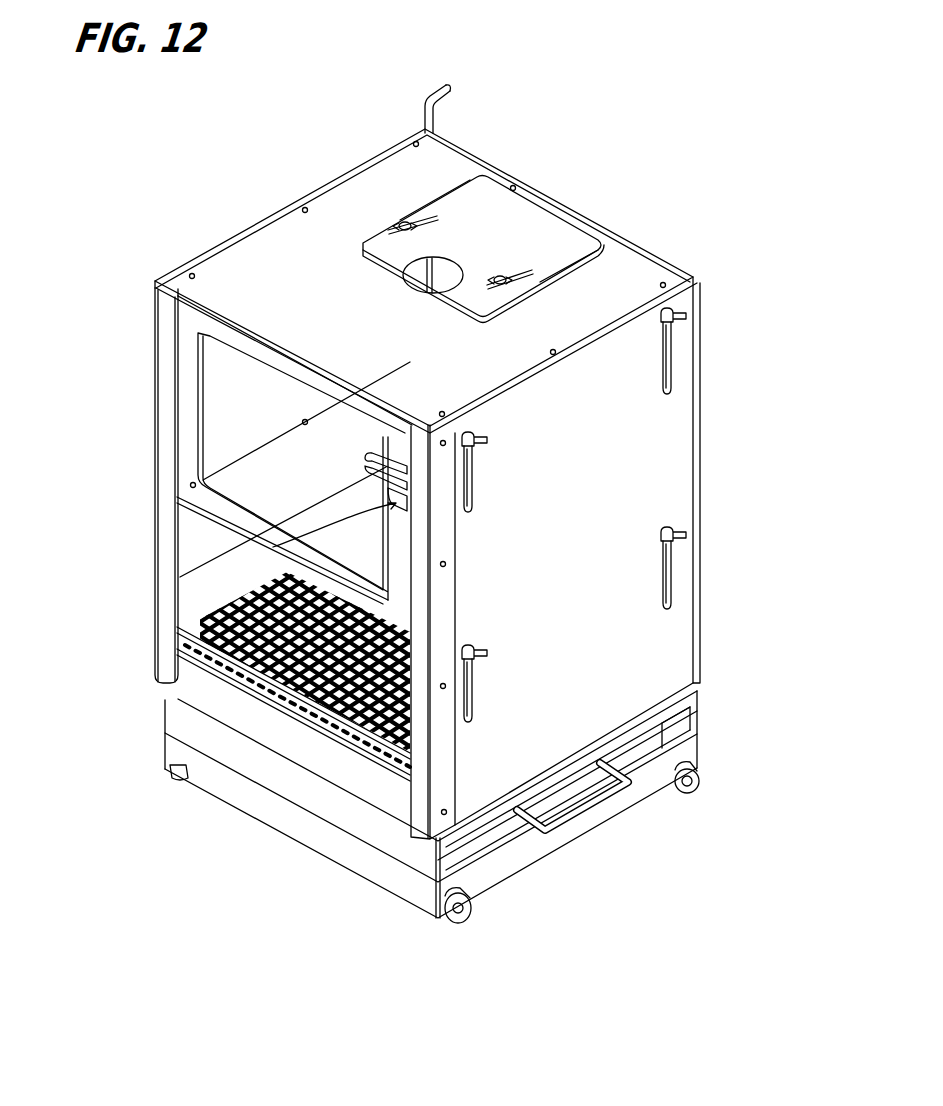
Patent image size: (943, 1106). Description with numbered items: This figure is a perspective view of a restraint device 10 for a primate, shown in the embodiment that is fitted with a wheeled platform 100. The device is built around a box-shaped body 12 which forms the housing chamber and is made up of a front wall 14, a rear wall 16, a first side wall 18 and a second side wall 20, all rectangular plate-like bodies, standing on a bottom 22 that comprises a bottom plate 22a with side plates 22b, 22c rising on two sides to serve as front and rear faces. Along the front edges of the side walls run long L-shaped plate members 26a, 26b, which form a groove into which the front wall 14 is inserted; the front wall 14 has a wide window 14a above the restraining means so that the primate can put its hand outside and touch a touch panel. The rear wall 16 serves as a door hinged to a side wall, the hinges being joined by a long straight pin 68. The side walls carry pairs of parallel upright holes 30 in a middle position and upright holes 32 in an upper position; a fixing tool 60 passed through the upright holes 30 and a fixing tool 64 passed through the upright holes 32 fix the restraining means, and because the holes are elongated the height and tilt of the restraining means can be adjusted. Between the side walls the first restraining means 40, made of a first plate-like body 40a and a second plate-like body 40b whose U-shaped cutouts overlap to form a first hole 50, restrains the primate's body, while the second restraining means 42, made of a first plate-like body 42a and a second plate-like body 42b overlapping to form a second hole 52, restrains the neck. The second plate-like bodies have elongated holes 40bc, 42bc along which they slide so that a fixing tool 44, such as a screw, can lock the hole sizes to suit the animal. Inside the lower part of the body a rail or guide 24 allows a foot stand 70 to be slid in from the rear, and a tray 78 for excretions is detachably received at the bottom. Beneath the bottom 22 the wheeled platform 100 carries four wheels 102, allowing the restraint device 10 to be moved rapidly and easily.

The restraint device 10 is at (633, 95).
The box-shaped body 12 is at (806, 706).
The front wall 14 is at (489, 386).
The window 14a is at (224, 364).
The rear wall 16 is at (640, 255).
The first side wall 18 is at (667, 632).
The second side wall 20 is at (395, 636).
The bottom 22 is at (612, 755).
The bottom plate 22a is at (606, 787).
The side plate 22b is at (418, 853).
The side plate 22c is at (693, 703).
The rail or guide 24 is at (207, 650).
The L-shaped plate member 26a is at (418, 777).
The L-shaped plate member 26b is at (162, 596).
The upright hole 30 is at (670, 580).
The upright hole 32 is at (670, 368).
The first restraining means 40 is at (234, 456).
The first plate-like body 40a is at (290, 453).
The second plate-like body 40b is at (377, 450).
The elongated hole 40bc is at (370, 475).
The second restraining means 42 is at (469, 215).
The first plate-like body 42a is at (586, 290).
The second plate-like body 42b is at (533, 235).
The elongated hole 42bc is at (392, 238).
The fixing tool 44 is at (390, 236).
The first hole 50 is at (260, 593).
The second hole 52 is at (439, 266).
The fixing tool 60 is at (683, 528).
The fixing tool 64 is at (680, 316).
The long straight pin 68 is at (438, 92).
The foot stand 70 is at (323, 708).
The tray 78 is at (568, 792).
The wheeled platform 100 is at (537, 846).
The wheel 102 is at (187, 777).